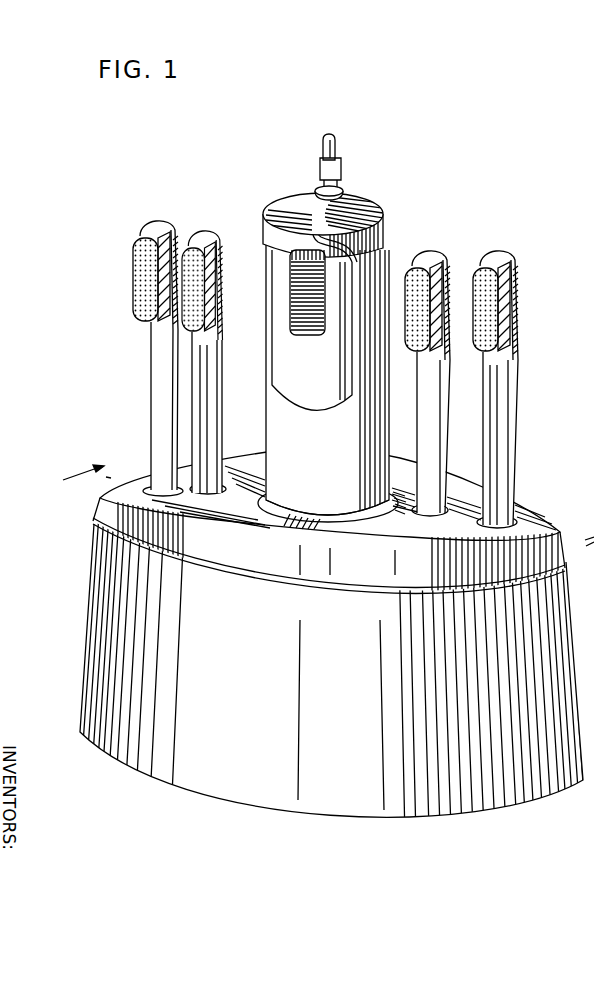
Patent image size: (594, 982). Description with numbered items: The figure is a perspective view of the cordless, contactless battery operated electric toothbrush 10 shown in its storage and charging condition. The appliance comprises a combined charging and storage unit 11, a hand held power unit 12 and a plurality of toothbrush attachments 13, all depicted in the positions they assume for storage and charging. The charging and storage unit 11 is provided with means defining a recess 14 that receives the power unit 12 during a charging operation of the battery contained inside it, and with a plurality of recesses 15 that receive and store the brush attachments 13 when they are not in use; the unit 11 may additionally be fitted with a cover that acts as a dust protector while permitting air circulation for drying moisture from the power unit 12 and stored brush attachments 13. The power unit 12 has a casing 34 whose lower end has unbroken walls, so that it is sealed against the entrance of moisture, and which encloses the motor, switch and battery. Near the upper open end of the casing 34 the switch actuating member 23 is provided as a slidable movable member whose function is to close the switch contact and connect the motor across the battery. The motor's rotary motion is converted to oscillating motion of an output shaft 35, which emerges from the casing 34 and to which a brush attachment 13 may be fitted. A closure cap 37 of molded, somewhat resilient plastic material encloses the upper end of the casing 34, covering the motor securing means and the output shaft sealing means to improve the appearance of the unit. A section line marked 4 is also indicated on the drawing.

The section line 4- 4 is at (328, 505).
The cordless electric toothbrush 10 is at (304, 850).
The charging and storage unit 11 is at (236, 779).
The hand held power unit 12 is at (385, 252).
The toothbrush attachments 13 is at (150, 395).
The recess 14 is at (391, 485).
The recesses 15 is at (452, 497).
The switch actuating member 23 is at (313, 317).
The casing 34 is at (307, 475).
The output shaft 35 is at (338, 162).
The closure cap 37 is at (368, 207).